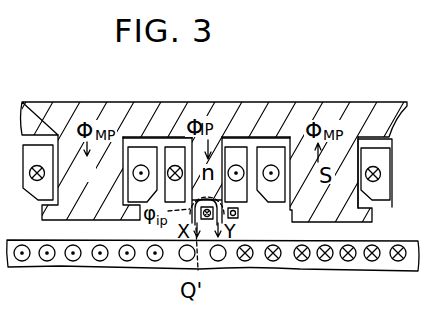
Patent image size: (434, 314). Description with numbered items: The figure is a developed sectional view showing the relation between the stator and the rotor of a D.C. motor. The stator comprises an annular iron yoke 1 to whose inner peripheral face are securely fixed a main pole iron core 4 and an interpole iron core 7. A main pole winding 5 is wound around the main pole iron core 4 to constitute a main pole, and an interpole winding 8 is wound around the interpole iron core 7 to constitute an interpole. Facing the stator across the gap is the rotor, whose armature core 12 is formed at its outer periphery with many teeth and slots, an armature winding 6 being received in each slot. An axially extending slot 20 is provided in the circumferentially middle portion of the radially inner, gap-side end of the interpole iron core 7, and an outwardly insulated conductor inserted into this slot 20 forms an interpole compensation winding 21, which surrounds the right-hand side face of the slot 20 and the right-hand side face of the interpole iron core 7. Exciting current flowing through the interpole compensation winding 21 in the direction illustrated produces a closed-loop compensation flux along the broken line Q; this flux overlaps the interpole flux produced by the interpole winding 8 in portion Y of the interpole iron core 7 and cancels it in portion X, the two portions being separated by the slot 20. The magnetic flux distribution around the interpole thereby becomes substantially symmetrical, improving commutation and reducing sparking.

The iron yoke 1 is at (282, 110).
The main pole iron core 4 is at (66, 142).
The main pole winding 5 is at (133, 147).
The armature winding 6 is at (311, 259).
The interpole iron core 7 is at (222, 137).
The interpole winding 8 is at (172, 147).
The armature core 12 is at (213, 272).
The axially extending slot 20 is at (206, 222).
The interpole compensation winding 21 is at (238, 213).